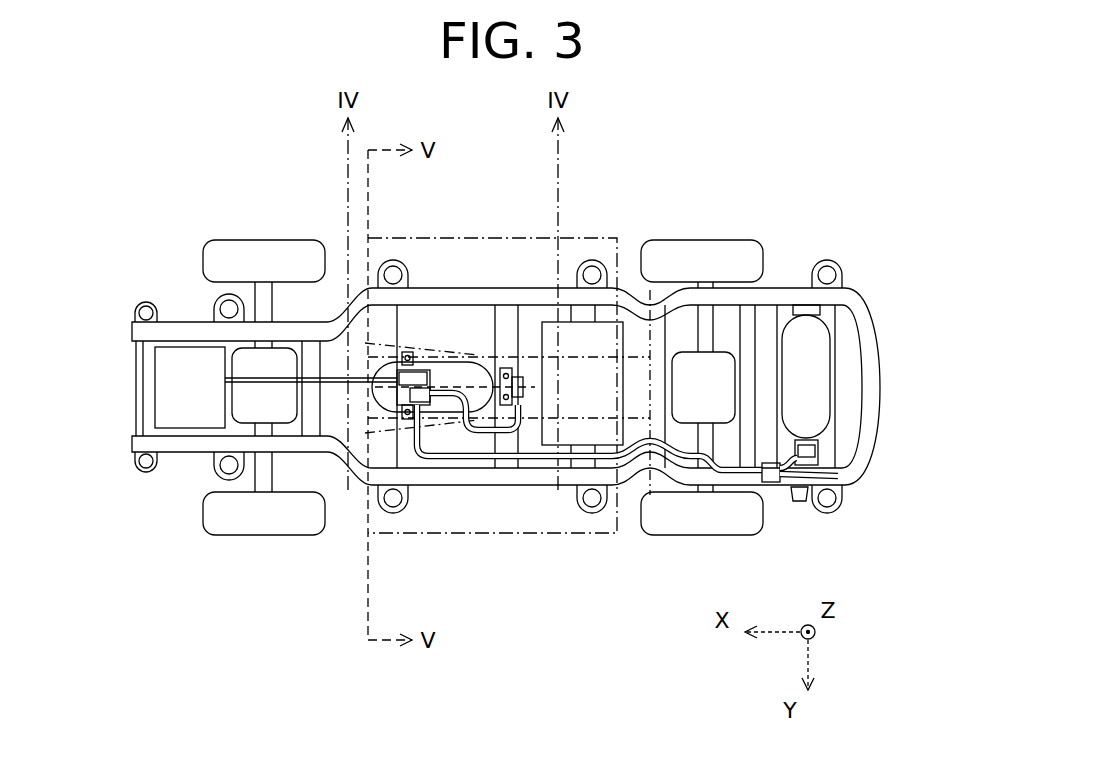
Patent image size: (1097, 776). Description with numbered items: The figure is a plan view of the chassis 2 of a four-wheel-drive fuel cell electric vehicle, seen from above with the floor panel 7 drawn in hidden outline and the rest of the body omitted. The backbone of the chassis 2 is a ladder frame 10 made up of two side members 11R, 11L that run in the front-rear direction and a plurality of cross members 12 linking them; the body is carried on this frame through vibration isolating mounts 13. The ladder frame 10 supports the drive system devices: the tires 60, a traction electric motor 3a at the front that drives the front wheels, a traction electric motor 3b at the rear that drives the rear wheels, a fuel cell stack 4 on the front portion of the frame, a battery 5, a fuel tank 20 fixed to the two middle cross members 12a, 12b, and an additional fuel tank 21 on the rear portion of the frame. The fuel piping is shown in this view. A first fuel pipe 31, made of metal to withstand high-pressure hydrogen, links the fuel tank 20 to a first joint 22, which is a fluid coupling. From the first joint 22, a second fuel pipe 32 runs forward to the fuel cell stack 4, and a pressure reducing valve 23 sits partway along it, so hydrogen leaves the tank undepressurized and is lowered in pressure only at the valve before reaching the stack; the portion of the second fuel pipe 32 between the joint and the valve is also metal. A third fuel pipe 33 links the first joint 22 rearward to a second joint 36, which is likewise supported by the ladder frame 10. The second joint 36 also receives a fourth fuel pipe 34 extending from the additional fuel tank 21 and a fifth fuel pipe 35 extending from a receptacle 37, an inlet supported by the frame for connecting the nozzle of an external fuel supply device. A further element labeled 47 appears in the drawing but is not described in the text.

The chassis 2 is at (158, 175).
The traction electric motor 3a is at (288, 348).
The traction electric motor 3b is at (722, 352).
The fuel cell stack 4 is at (153, 375).
The battery 5 is at (612, 330).
The floor panel 7 is at (650, 495).
The ladder frame 10 is at (891, 294).
The side member 11R is at (177, 322).
The side member 11L is at (187, 452).
The cross member 12 is at (137, 400).
The cross member 12a is at (400, 462).
The cross member 12b is at (497, 462).
The vibration isolating mount 13 is at (133, 313).
The fuel tank 20 is at (478, 362).
The additional fuel tank 21 is at (826, 380).
The first joint 22 is at (430, 370).
The pressure reducing valve 23 is at (410, 352).
The first fuel pipe 31 is at (470, 432).
The second fuel pipe 32 is at (333, 376).
The third fuel pipe 33 is at (535, 458).
The fourth fuel pipe 34 is at (818, 452).
The fifth fuel pipe 35 is at (840, 478).
The second joint 36 is at (772, 483).
The receptacle 37 is at (800, 502).
The pressure regulator 47 is at (428, 388).
The tire 60 is at (297, 240).